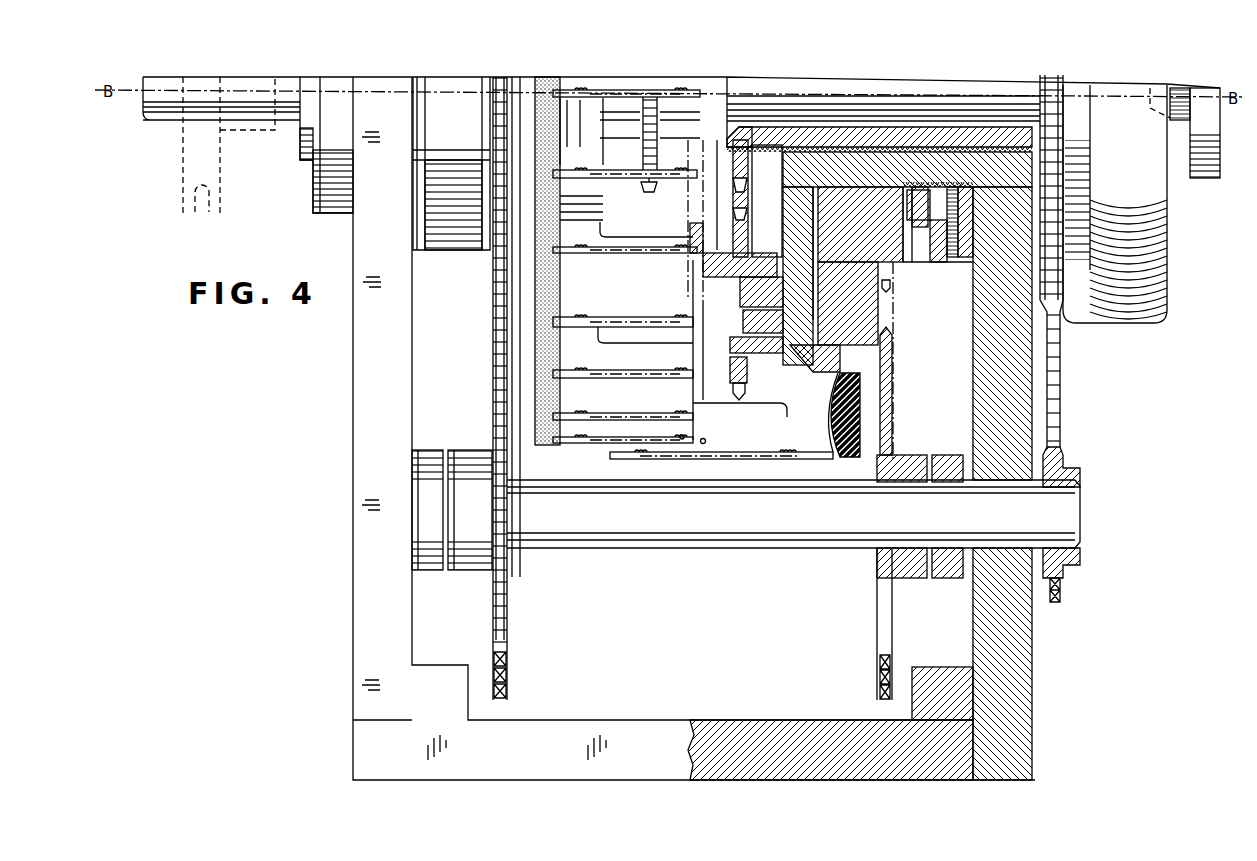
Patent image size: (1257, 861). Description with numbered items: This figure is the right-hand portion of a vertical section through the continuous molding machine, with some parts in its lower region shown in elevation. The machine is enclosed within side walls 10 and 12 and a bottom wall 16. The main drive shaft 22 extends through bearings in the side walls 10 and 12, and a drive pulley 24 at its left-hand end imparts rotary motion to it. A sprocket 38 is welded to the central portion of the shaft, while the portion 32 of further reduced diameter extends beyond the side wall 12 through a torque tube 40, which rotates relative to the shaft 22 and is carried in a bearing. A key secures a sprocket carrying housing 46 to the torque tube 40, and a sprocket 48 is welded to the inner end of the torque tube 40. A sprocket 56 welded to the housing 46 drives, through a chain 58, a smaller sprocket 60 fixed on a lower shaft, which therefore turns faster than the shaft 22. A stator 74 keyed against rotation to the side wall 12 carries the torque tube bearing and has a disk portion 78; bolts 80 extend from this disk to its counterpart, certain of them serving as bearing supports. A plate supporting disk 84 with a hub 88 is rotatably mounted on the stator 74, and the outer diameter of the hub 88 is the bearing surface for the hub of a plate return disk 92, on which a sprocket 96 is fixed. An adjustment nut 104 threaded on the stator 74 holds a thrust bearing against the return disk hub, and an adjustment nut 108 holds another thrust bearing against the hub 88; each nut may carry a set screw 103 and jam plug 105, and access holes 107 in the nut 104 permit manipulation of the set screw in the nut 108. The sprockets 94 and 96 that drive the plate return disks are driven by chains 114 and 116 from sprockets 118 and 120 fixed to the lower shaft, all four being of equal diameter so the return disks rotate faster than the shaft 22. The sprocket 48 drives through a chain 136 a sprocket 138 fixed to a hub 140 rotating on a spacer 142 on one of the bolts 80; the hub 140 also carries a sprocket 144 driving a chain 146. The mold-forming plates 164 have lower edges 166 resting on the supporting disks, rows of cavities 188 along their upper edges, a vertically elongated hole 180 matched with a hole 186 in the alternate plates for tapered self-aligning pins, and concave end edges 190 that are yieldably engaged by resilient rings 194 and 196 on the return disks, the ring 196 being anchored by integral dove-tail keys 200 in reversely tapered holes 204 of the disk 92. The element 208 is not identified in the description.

The side wall 10 is at (370, 300).
The side wall 12 is at (1018, 654).
The bottom wall 16 is at (750, 760).
The main drive shaft 22 is at (169, 129).
The drive pulley 24 is at (183, 160).
The shaft portion of further reduced diameter 32 is at (836, 78).
The sprocket 38 is at (658, 113).
The torque tube 40 is at (884, 140).
The sprocket carrying housing 46 is at (1165, 285).
The sprocket 48 is at (746, 136).
The sprocket 56 is at (1052, 200).
The chain 58 is at (1062, 512).
The sprocket 60 is at (1068, 470).
The stator 74 is at (848, 170).
The disk portion 78 is at (790, 202).
The bolts 80 is at (768, 302).
The plate supporting disk 84 is at (836, 370).
The hub 88 is at (877, 213).
The plate return disk 92 is at (882, 350).
The sprocket 94 is at (495, 174).
The sprocket 96 is at (892, 287).
The set screw 103 is at (963, 200).
The adjustment nut 104 is at (940, 255).
The jam plug 105 is at (963, 187).
The access holes 107 is at (915, 258).
The adjustment nut 108 is at (932, 185).
The chain 114 is at (493, 300).
The chain 116 is at (897, 313).
The sprocket 118 is at (493, 405).
The sprocket 120 is at (848, 408).
The chain 136 is at (752, 193).
The sprocket 138 is at (733, 378).
The hub 140 is at (756, 257).
The spacer 142 is at (765, 333).
The sprocket 144 is at (689, 229).
The chain 146 is at (683, 187).
The mold-forming plate 164 is at (751, 461).
The lower edge 166 is at (797, 373).
The vertically elongated slot or hole 180 is at (704, 440).
The hole 186 is at (680, 435).
The cavities 188 is at (588, 318).
The concave end edges 190 is at (825, 425).
The resilient ring 194 is at (537, 257).
The resilient ring 196 is at (842, 430).
The dove-tail keys 200 is at (975, 412).
The reversely tapered holes 204 is at (975, 380).
The pad 208 is at (852, 397).